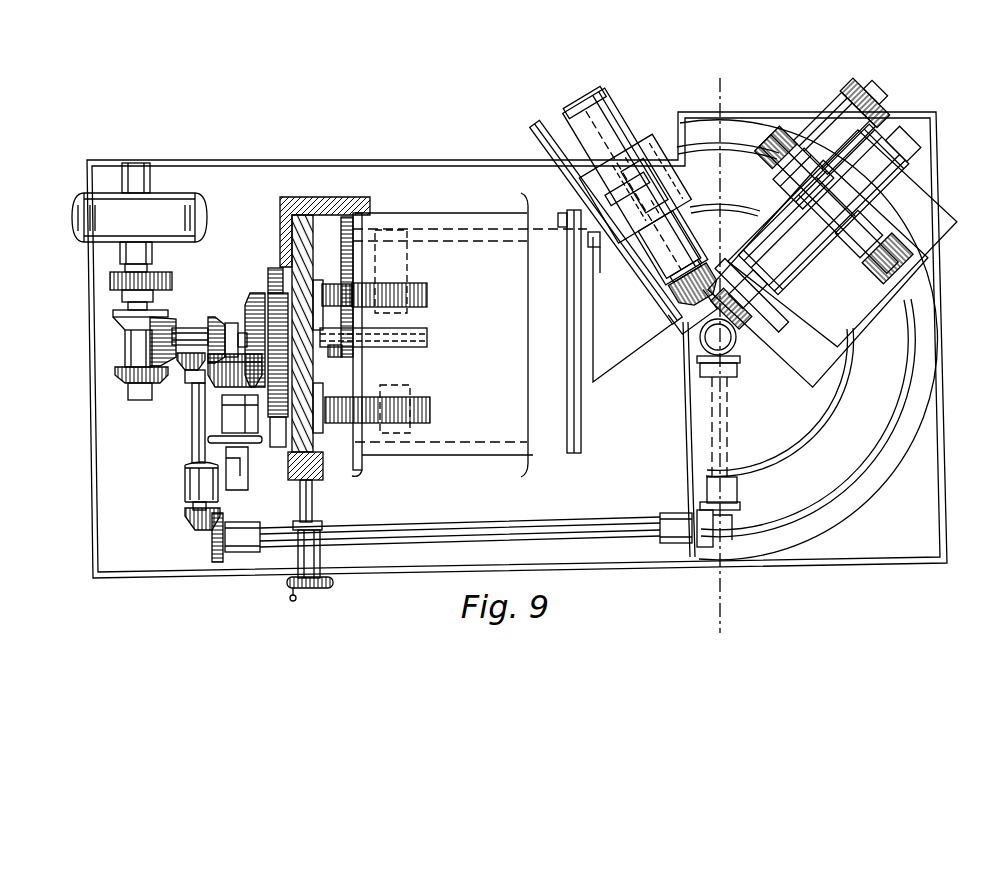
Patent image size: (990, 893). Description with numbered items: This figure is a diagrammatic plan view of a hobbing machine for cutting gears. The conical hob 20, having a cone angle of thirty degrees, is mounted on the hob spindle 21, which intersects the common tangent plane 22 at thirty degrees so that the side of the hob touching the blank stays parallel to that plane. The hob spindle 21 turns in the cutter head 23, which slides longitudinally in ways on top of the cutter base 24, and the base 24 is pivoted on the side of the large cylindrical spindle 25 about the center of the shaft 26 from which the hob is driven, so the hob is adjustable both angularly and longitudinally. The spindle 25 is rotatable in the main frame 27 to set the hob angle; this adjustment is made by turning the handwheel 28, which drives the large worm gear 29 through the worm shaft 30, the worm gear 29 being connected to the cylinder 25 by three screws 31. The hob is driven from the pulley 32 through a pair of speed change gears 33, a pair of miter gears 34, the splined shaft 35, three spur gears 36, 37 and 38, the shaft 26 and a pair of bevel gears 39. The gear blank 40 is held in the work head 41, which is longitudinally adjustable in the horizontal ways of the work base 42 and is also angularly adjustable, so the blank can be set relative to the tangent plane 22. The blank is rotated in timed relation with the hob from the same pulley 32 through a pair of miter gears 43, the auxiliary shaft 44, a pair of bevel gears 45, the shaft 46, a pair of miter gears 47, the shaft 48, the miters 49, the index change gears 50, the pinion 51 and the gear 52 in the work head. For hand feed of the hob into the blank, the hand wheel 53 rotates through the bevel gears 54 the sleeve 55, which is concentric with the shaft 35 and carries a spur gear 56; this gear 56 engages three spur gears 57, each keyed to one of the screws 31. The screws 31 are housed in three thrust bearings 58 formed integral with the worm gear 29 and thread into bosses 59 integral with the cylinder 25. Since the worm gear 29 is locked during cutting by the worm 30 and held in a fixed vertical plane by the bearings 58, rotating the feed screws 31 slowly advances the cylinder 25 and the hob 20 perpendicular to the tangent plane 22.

The hob 20 is at (684, 330).
The hob spindle 21 is at (577, 101).
The common tangent plane 22 is at (717, 346).
The cutter head 23 is at (620, 125).
The cutter base 24 is at (532, 133).
The spindle 25 is at (551, 226).
The shaft 26 is at (456, 213).
The main frame 27 is at (472, 457).
The handwheel 28 is at (324, 588).
The worm gear 29 is at (315, 207).
The worm shaft 30 is at (314, 507).
The screws 31 is at (427, 297).
The pulley 32 is at (72, 206).
The speed change gears 33 is at (172, 280).
The miter gears 34 is at (120, 318).
The splined shaft 35 is at (333, 357).
The spur gear 36 is at (362, 349).
The spur gear 37 is at (353, 316).
The spur gear 38 is at (352, 212).
The bevel gears 39 is at (630, 307).
The gear blank 40 is at (780, 334).
The work head 41 is at (843, 242).
The work base 42 is at (873, 318).
The miter gears 43 is at (216, 318).
The auxiliary shaft 44 is at (192, 440).
The bevel gears 45 is at (207, 534).
The shaft 46 is at (544, 526).
The miter gears 47 is at (741, 508).
The shaft 48 is at (729, 420).
The miters 49 is at (740, 360).
The index change gears 50 is at (858, 81).
The pinion 51 is at (768, 140).
The gear 52 is at (890, 263).
The hand wheel 53 is at (252, 452).
The bevel gears 54 is at (256, 300).
The sleeve 55 is at (318, 320).
The spur gear 56 is at (270, 296).
The spur gears 57 is at (274, 268).
The bearings 58 is at (324, 444).
The bosses 59 is at (410, 390).